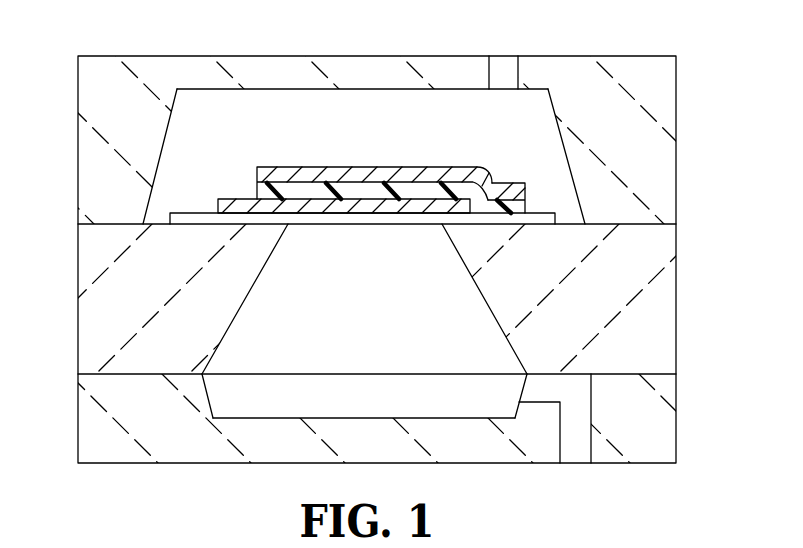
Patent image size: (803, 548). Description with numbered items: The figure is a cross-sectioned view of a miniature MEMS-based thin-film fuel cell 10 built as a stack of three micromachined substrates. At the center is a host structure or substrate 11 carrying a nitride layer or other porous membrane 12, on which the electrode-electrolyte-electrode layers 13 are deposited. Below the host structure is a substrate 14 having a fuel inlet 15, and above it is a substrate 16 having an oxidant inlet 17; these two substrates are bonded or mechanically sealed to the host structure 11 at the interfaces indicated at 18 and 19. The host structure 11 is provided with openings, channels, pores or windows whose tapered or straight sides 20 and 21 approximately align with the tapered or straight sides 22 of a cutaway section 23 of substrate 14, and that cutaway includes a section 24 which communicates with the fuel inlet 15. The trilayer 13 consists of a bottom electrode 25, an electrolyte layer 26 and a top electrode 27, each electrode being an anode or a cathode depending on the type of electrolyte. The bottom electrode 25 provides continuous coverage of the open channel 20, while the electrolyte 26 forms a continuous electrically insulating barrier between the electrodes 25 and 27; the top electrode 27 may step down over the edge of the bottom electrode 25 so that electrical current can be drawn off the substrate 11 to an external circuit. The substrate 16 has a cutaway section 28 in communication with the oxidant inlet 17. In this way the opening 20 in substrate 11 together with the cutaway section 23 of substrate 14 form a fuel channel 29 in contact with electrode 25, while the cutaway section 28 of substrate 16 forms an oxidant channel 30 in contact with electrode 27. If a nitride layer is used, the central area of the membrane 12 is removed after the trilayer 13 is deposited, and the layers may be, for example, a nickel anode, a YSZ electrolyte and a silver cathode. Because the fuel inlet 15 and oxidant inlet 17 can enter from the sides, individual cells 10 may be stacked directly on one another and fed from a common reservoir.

The fuel cell 10 is at (710, 181).
The host structure or substrate 11 is at (362, 299).
The nitride layer or porous membrane 12 is at (290, 224).
The electrode-electrolyte-electrode layers 13 is at (362, 191).
The substrate 14 is at (406, 423).
The fuel inlet 15 is at (575, 445).
The substrate 16 is at (387, 126).
The oxidant inlet 17 is at (502, 67).
The bond or mechanical seal 18 is at (79, 375).
The bond or mechanical seal 19 is at (79, 224).
The tapered or straight side 20 is at (258, 281).
The tapered or straight side 21 is at (463, 260).
The tapered or straight sides 22 is at (213, 404).
The cutaway section 23 is at (375, 418).
The section 24 is at (522, 398).
The electrode 25 is at (230, 199).
The electrolyte layer 26 is at (526, 202).
The electrode 27 is at (444, 166).
The cutaway section 28 is at (296, 90).
The fuel channel 29 is at (364, 299).
The oxidant channel 30 is at (364, 156).